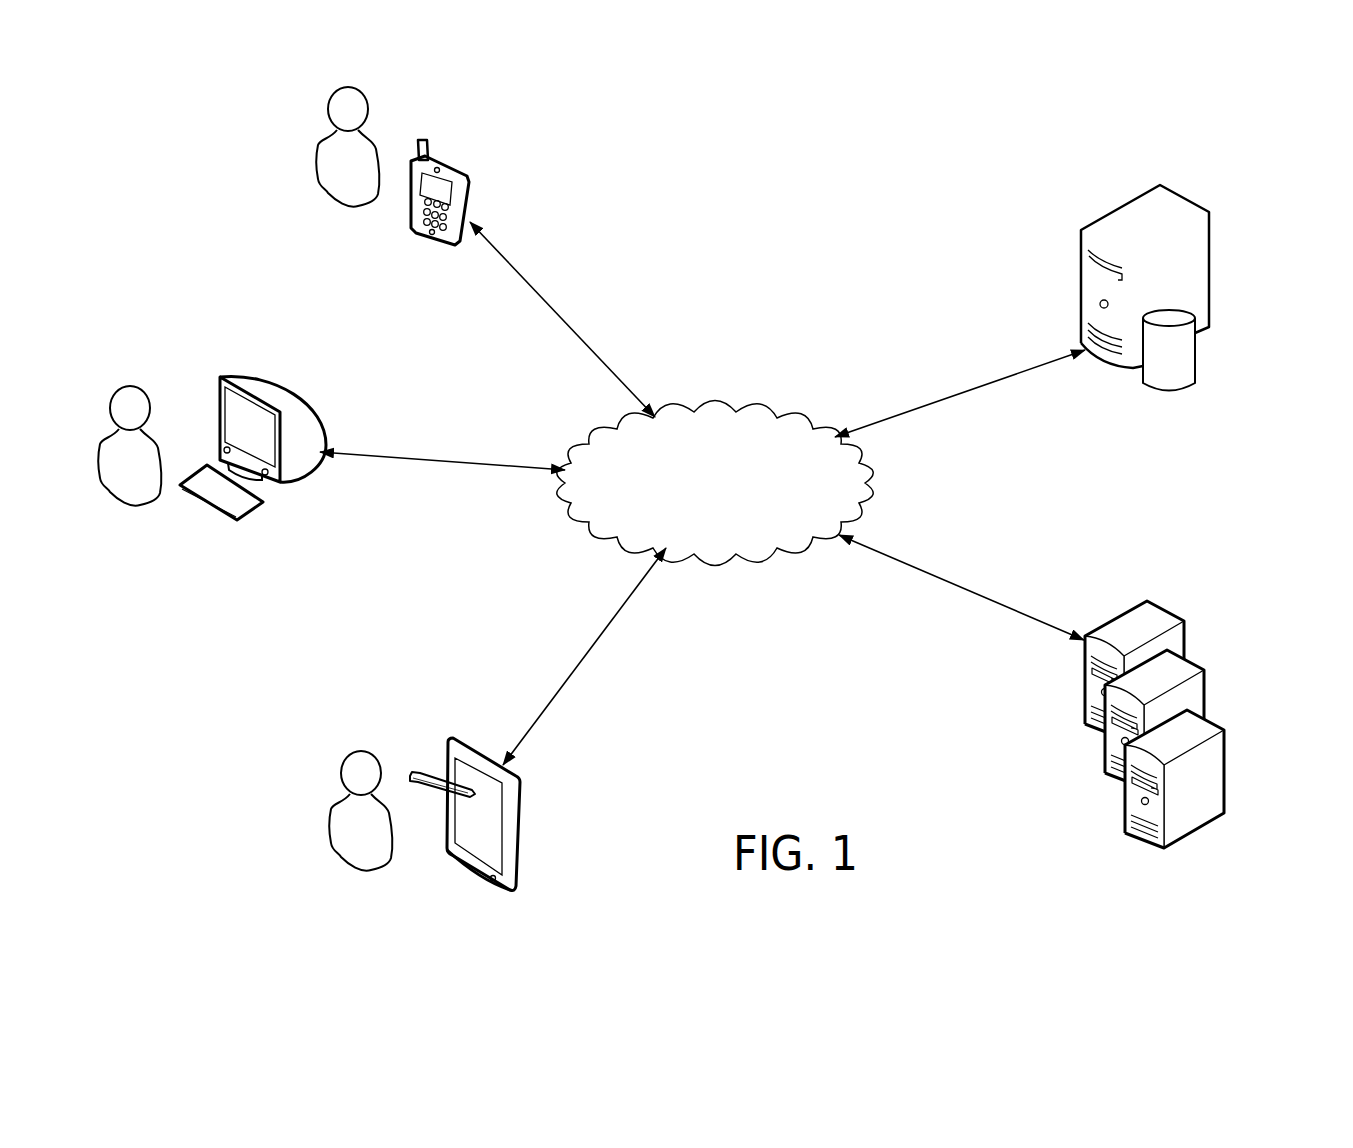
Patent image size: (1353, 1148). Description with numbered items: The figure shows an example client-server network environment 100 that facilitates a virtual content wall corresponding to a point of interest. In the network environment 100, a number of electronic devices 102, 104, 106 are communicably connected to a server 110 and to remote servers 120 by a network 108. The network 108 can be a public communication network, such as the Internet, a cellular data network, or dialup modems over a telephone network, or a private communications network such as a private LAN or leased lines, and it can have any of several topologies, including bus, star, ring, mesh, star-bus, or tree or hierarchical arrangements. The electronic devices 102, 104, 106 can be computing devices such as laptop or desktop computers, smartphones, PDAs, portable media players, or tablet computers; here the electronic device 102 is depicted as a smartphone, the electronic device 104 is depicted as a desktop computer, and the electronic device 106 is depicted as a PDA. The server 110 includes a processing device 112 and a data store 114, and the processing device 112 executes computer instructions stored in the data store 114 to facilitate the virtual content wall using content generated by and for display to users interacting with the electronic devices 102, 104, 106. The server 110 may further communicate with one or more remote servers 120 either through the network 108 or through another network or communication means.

The network environment 100 is at (841, 150).
The electronic device 102 is at (470, 176).
The electronic device 104 is at (280, 442).
The electronic device 106 is at (468, 787).
The network 108 is at (715, 470).
The server 110 is at (1083, 390).
The processing device 112 is at (1171, 255).
The data store 114 is at (1197, 383).
The remote servers 120 is at (1077, 816).